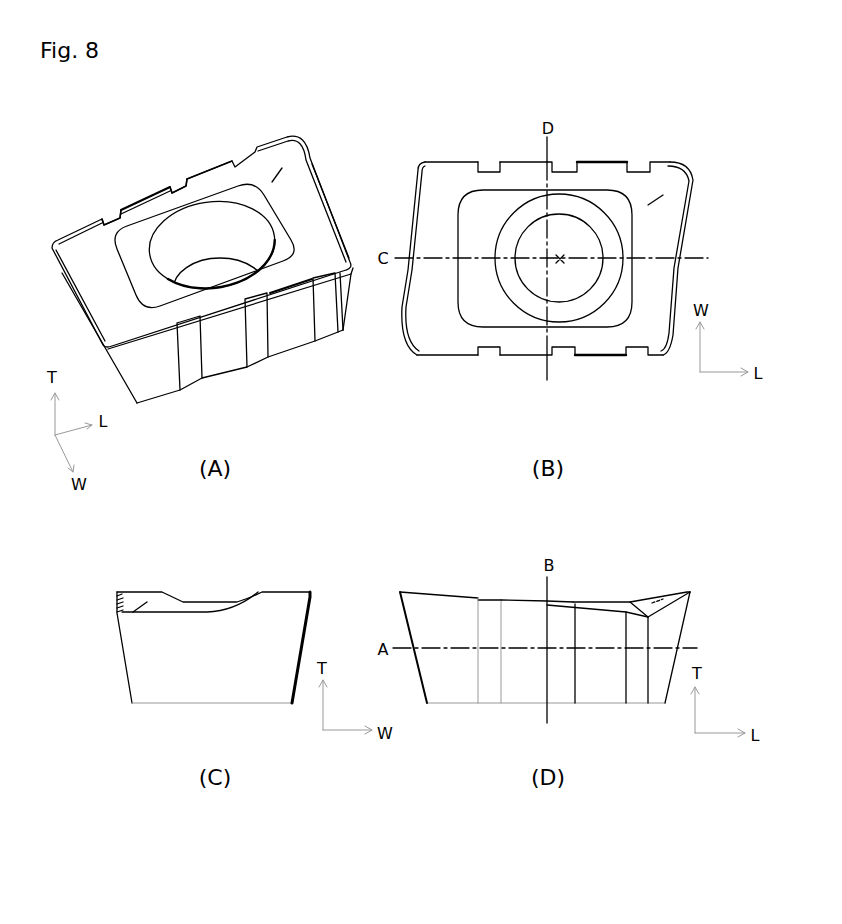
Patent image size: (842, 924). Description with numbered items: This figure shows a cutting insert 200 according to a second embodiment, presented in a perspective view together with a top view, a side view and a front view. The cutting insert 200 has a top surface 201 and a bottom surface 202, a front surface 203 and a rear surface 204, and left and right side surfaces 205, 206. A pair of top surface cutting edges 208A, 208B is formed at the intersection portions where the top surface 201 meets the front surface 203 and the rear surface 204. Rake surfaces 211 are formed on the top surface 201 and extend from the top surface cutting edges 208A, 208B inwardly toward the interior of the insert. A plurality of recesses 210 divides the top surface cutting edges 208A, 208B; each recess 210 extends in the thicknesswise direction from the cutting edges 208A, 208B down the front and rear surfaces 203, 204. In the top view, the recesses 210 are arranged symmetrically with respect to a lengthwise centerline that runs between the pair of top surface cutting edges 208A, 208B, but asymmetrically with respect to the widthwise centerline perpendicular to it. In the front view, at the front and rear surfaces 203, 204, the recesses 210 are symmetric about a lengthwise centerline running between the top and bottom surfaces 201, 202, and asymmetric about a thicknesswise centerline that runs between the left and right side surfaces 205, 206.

The cutting insert 200 is at (80, 133).
The top surface 201 is at (300, 195).
The bottom surface 202 is at (227, 377).
The front surface 203 is at (297, 348).
The rear surface 204 is at (195, 177).
The left side surface 205 is at (82, 320).
The right side surface 206 is at (332, 213).
The top surface cutting edge 208A is at (292, 289).
The top surface cutting edge 208B is at (150, 197).
The recess 210 is at (112, 218).
The rake surface 211 is at (219, 160).